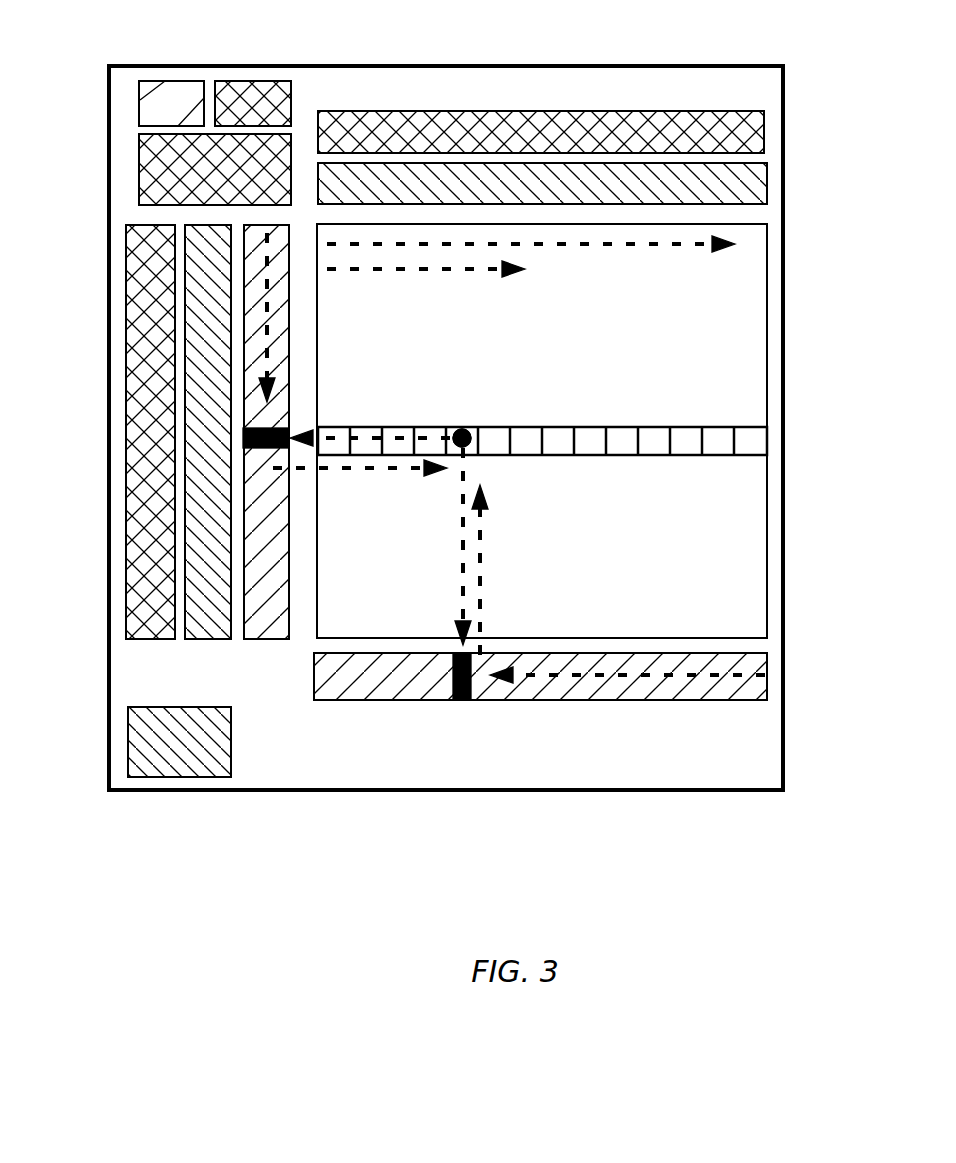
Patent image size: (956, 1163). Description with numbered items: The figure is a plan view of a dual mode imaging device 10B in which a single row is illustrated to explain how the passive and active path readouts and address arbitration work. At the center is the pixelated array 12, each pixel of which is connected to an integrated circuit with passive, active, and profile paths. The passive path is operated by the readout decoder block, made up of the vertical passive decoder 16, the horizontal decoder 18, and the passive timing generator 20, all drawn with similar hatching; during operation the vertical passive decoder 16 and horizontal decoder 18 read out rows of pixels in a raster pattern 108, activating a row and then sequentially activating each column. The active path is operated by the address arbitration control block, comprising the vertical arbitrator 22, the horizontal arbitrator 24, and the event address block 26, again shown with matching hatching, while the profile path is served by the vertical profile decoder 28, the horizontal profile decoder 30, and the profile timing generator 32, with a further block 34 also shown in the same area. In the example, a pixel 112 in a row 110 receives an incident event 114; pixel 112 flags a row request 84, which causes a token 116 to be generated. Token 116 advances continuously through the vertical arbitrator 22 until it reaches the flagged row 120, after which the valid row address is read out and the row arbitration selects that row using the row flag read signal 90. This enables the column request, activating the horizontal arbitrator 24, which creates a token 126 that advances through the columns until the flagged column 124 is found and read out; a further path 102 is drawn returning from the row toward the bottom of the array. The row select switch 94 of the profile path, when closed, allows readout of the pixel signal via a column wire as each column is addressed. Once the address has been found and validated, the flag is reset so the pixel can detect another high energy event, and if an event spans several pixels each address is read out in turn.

The imaging device 10B is at (622, 812).
The pixelated array 12 is at (764, 353).
The vertical passive decoder 16 is at (193, 640).
The horizontal decoder 18 is at (764, 177).
The passive timing generator 20 is at (225, 778).
The vertical arbitrator 22 is at (258, 640).
The horizontal arbitrator 24 is at (680, 700).
The event address block 26 is at (185, 80).
The vertical profile decoder 28 is at (135, 477).
The horizontal profile decoder 30 is at (767, 140).
The profile timing generator 32 is at (145, 163).
The reset block 34 is at (248, 79).
The row request 84 is at (418, 427).
The row flag read signal 90 is at (403, 470).
The row select switch 94 is at (480, 586).
The downward signal path 102 is at (462, 535).
The raster pattern 108 is at (470, 272).
The row 110 is at (600, 456).
The pixel 112 is at (466, 429).
The incident event 114 is at (468, 450).
The token 116 is at (268, 310).
The flagged row 120 is at (280, 428).
The flagged column 124 is at (455, 700).
The token 126 is at (618, 680).